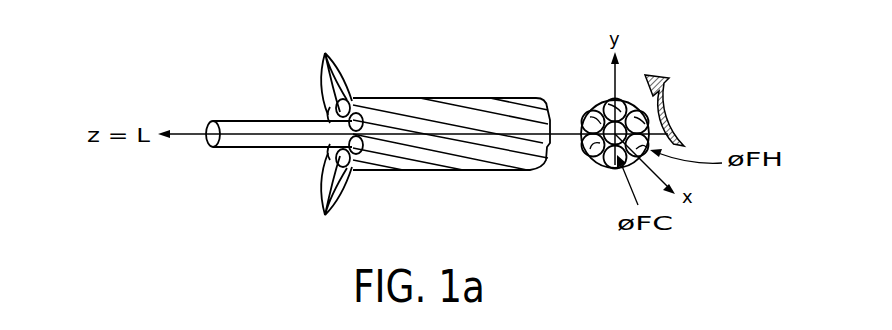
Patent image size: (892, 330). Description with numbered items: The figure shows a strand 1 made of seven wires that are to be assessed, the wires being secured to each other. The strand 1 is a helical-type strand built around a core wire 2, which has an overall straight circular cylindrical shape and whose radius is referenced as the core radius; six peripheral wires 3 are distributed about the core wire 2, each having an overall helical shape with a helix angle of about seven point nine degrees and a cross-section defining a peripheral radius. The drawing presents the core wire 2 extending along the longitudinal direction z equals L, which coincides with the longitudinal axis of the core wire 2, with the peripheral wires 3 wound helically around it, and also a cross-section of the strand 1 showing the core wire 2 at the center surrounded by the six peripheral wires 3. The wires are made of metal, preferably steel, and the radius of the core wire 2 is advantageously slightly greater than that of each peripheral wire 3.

The strand 1 is at (405, 82).
The core wire 2 is at (255, 121).
The peripheral wires 3 is at (737, 93).